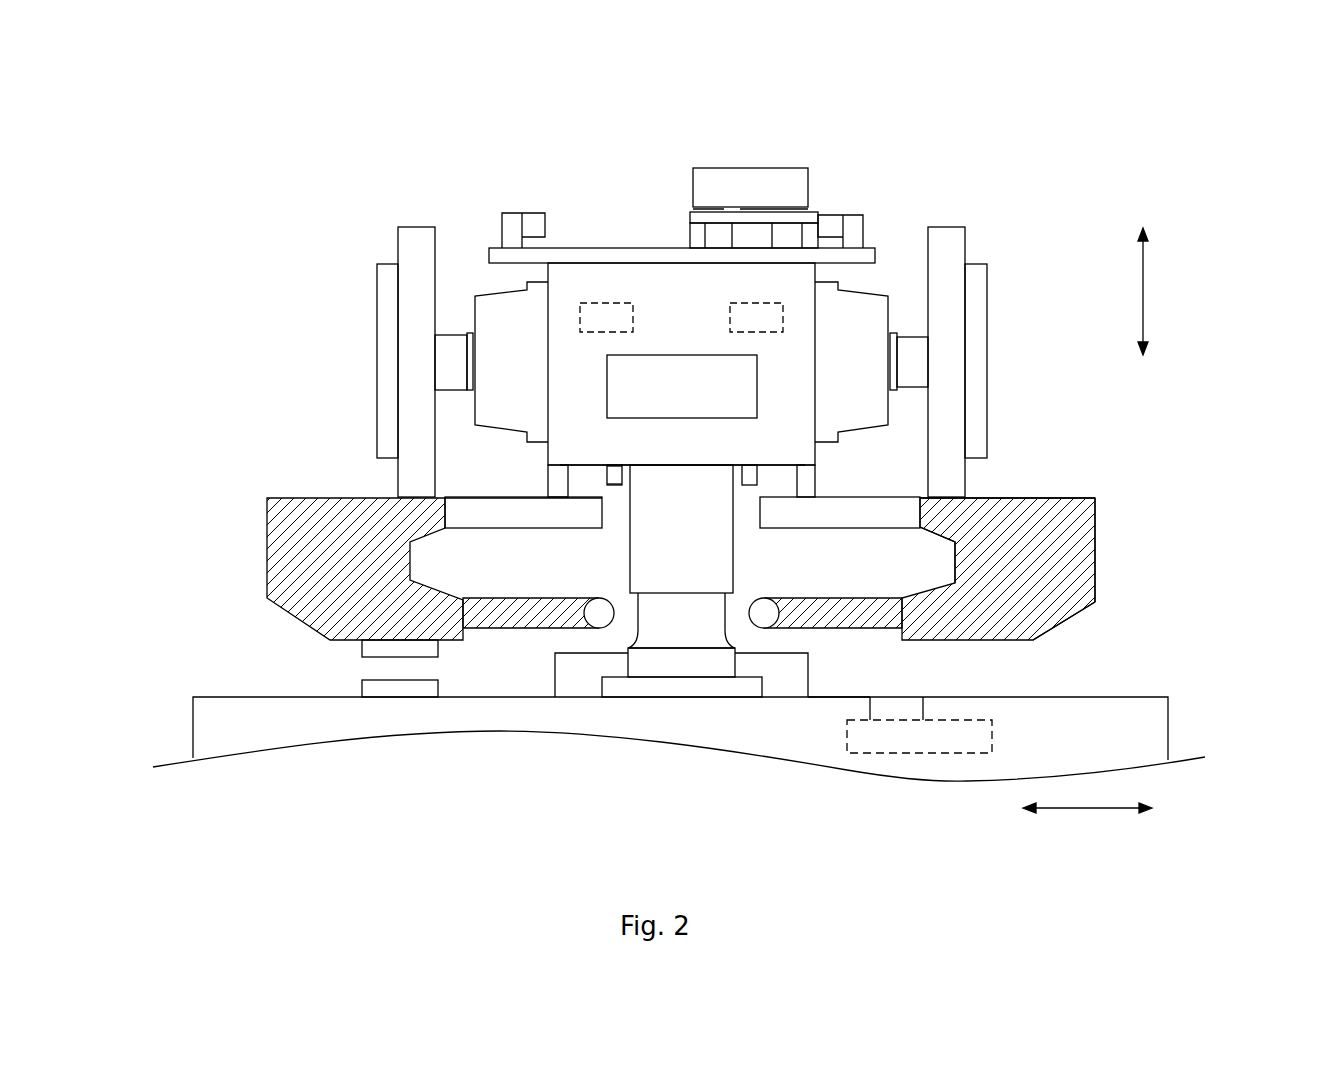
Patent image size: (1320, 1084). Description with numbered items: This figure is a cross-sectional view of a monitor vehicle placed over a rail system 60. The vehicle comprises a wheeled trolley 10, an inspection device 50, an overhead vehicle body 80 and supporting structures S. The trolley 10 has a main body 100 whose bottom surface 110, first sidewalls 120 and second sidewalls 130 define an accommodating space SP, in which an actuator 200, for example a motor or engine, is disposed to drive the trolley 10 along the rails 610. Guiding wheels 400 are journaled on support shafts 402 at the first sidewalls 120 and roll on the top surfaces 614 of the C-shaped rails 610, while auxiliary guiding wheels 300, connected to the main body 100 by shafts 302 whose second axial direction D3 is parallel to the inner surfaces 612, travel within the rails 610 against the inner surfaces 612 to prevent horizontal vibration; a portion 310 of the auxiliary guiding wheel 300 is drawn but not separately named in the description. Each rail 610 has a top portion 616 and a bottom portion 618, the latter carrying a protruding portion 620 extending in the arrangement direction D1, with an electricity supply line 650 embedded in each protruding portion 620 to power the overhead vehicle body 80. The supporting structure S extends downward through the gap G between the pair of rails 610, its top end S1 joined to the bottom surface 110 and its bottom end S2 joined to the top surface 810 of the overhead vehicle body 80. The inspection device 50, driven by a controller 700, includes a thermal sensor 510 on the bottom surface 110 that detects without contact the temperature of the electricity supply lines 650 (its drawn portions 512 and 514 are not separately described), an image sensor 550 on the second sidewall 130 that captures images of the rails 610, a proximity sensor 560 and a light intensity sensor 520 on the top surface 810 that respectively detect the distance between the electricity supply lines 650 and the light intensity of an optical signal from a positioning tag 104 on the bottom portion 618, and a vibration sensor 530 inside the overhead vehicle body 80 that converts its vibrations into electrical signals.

The wheeled trolley 10 is at (177, 168).
The inspection device 50 is at (1262, 83).
The rail system 60 is at (265, 580).
The overhead vehicle body 80 is at (1165, 728).
The main body 100 is at (585, 275).
The positioning tag 104 is at (373, 652).
The bottom surface 110 is at (780, 465).
The first sidewalls 120 is at (453, 348).
The second sidewalls 130 is at (800, 295).
The actuator 200 is at (617, 300).
The auxiliary guiding wheels 300 is at (843, 497).
The shafts 302 is at (808, 480).
The holder upper surface 310 is at (495, 517).
The guiding wheels 400 is at (408, 250).
The support shafts 402 is at (458, 330).
The thermal sensor 510 is at (613, 483).
The first portion of sensing element 512 is at (610, 468).
The second portion of sensing element 514 is at (596, 481).
The light intensity sensor 520 is at (398, 690).
The vibration sensor 530 is at (918, 753).
The image sensor 550 is at (665, 368).
The proximity sensor 560 is at (793, 690).
The rails 610 is at (278, 558).
The inner surfaces 612 is at (922, 513).
The top surfaces 614 is at (1050, 498).
The top portion 616 is at (1087, 513).
The bottom portion 618 is at (1055, 613).
The protruding portion 620 is at (825, 620).
The electricity supply lines 650 is at (599, 614).
The controller 700 is at (750, 302).
The top surface 810 is at (838, 700).
The accommodating space SP is at (565, 296).
The gap G is at (620, 634).
The supporting structure S is at (682, 547).
The top end S1 is at (722, 472).
The bottom end S2 is at (643, 685).
The second axial direction D3 is at (1164, 291).
The arrangement direction D1 is at (1087, 823).